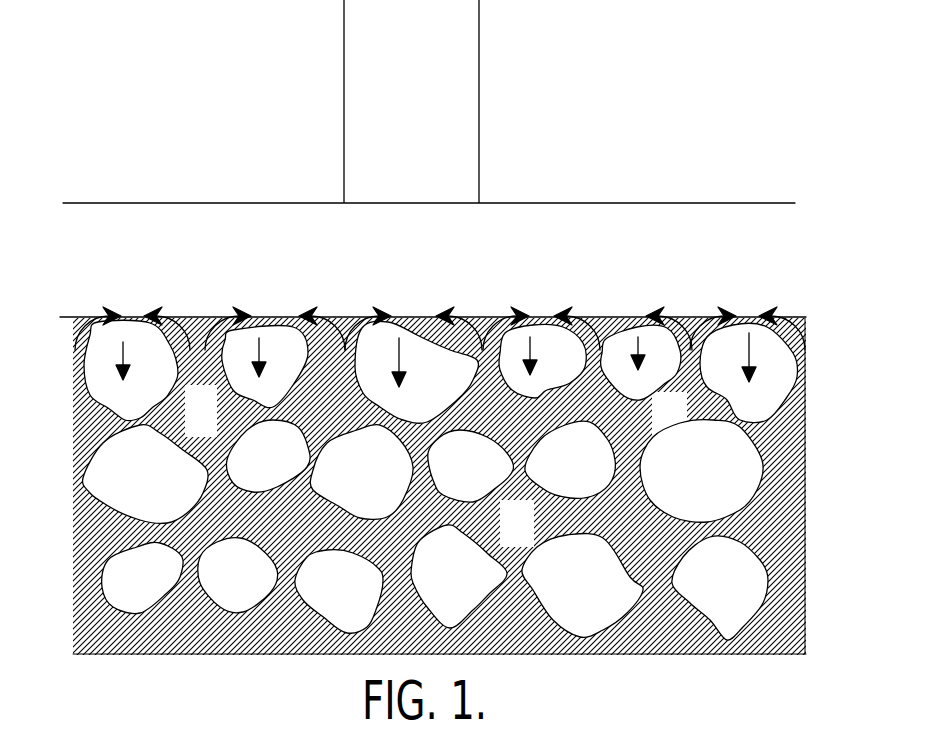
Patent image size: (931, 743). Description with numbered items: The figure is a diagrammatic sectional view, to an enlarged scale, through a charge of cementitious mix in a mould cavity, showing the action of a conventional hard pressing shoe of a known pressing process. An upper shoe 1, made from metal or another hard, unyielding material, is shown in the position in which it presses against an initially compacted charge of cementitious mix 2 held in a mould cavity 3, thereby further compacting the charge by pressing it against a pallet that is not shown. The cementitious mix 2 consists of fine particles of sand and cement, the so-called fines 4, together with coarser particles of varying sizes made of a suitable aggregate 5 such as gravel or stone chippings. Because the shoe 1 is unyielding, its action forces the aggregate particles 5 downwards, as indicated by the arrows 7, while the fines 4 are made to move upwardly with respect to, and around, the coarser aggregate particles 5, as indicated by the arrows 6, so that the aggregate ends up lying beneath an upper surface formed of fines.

The upper shoe 1 is at (532, 242).
The cementitious mix 2 is at (818, 400).
The mould cavity 3 is at (848, 541).
The fines 4 is at (213, 431).
The aggregate 5 is at (444, 403).
The arrows 6 is at (553, 310).
The arrows 7 is at (527, 355).